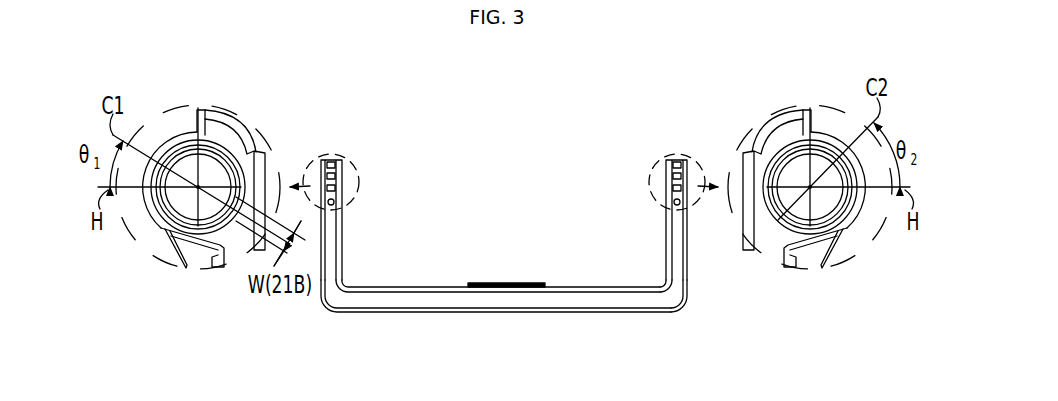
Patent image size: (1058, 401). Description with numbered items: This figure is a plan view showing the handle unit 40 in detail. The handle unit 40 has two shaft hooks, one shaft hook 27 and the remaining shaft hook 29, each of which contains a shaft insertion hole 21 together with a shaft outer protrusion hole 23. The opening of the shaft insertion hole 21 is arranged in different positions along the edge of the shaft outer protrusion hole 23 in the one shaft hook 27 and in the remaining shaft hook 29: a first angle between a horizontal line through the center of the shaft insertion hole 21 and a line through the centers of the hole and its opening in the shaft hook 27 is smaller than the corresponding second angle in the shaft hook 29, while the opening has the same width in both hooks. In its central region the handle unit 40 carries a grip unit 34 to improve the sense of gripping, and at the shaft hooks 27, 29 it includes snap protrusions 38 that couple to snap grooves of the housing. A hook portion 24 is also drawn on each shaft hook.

The shaft insertion hole 21 is at (217, 158).
The shaft outer protrusion hole 23 is at (244, 145).
The hook 24 is at (160, 233).
The shaft hook 27 is at (229, 258).
The shaft hook 29 is at (779, 258).
The grip unit 34 is at (502, 283).
The snap protrusion 38 is at (668, 271).
The handle unit 40 is at (508, 313).